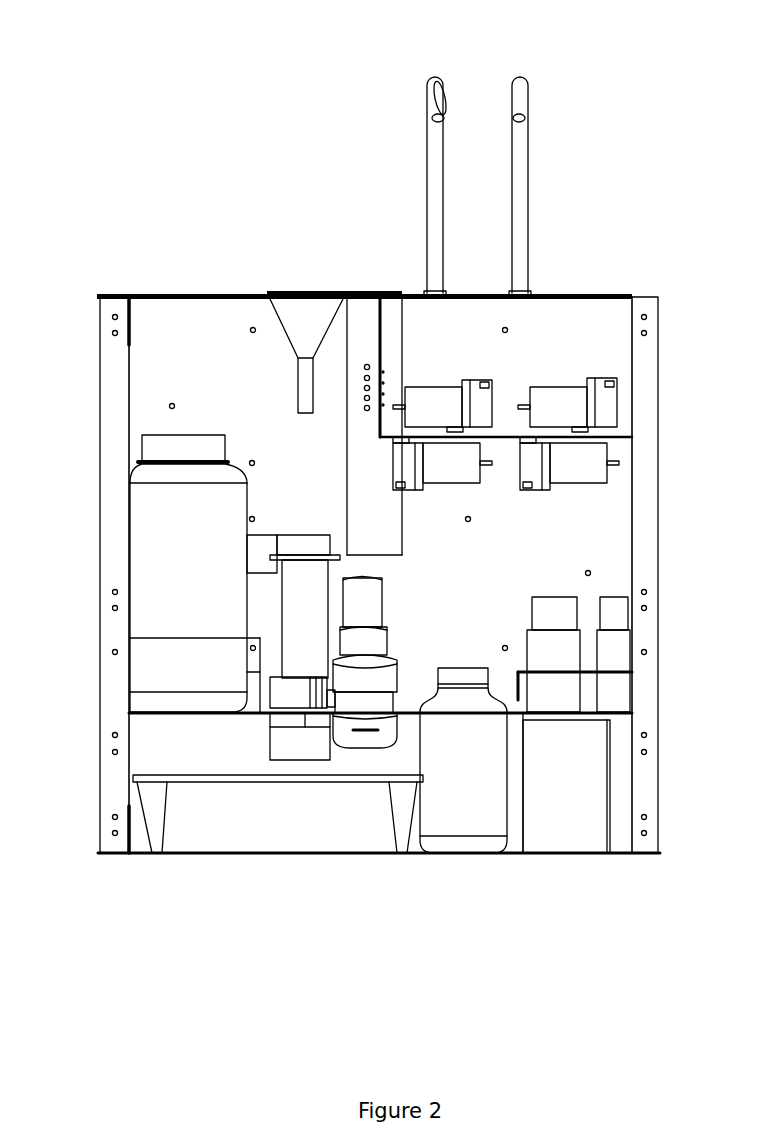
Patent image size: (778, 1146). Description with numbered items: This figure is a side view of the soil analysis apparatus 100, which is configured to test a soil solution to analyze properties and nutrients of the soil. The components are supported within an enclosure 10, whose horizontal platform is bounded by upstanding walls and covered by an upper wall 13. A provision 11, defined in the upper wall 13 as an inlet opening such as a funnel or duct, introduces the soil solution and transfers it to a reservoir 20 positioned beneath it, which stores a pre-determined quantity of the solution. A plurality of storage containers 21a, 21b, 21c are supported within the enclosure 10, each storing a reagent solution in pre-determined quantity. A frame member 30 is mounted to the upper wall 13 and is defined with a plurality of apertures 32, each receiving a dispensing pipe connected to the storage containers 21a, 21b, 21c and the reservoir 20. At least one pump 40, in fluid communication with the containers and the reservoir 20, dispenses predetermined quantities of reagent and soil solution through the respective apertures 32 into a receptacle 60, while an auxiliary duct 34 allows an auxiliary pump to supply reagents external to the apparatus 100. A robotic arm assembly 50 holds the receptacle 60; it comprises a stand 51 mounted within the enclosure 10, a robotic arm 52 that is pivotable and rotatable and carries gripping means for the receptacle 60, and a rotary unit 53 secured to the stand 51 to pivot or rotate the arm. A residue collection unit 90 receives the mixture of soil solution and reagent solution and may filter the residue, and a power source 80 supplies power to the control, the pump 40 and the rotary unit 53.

The soil analysis apparatus 100 is at (180, 122).
The enclosure 10 is at (105, 525).
The provision 11 is at (289, 298).
The upper wall 13 is at (231, 283).
The reservoir 20 is at (304, 522).
The storage container 21a is at (558, 646).
The storage container 21b is at (463, 822).
The storage container 21c is at (182, 424).
The frame member 30 is at (356, 302).
The apertures 32 is at (371, 352).
The auxiliary duct 34 is at (508, 73).
The pump 40 is at (465, 372).
The robotic arm assembly 50 is at (491, 676).
The stand 51 is at (367, 741).
The robotic arm 52 is at (355, 684).
The rotary unit 53 is at (290, 702).
The receptacle 60 is at (661, 585).
The power source 80 is at (576, 834).
The residue collection unit 90 is at (192, 823).